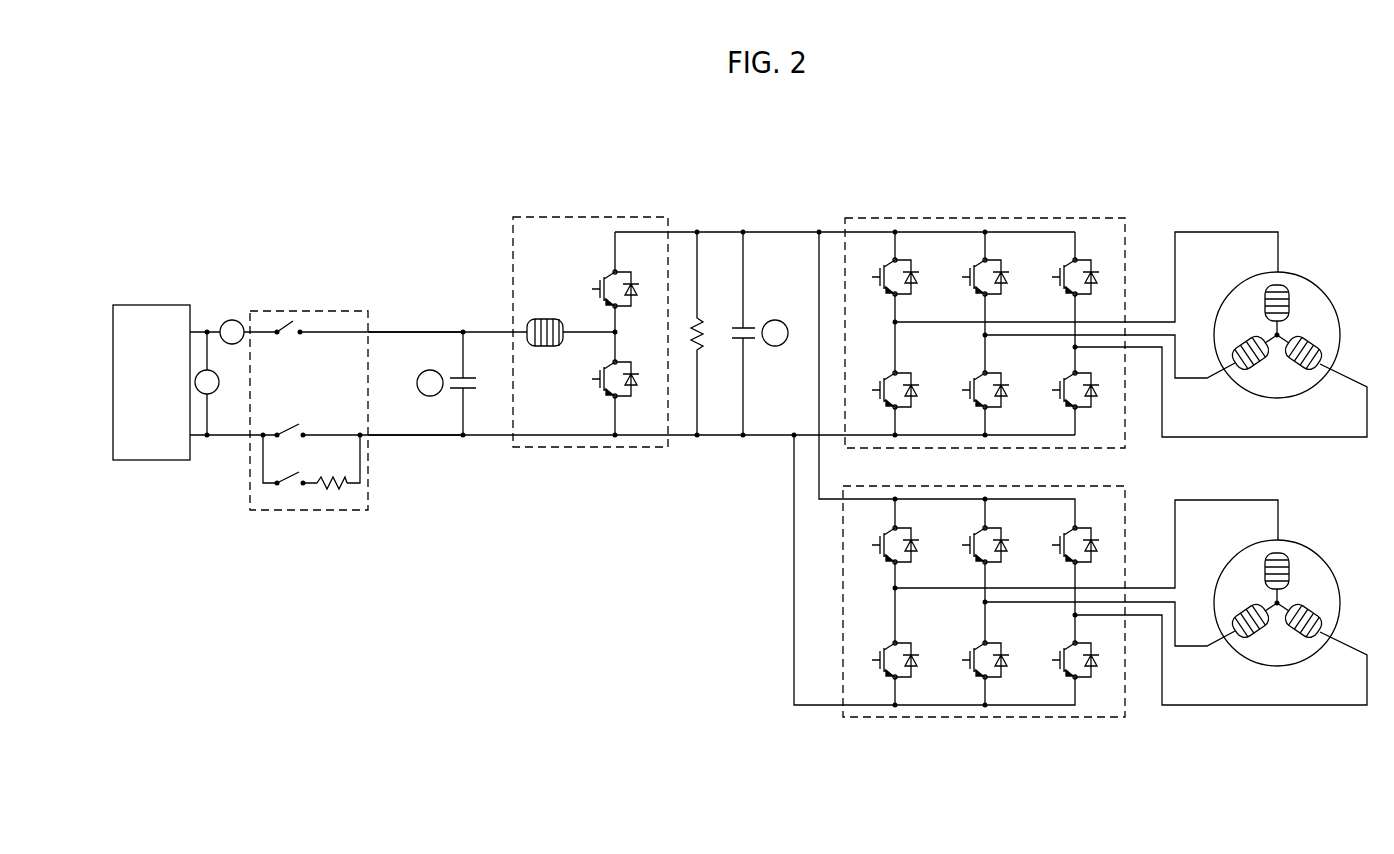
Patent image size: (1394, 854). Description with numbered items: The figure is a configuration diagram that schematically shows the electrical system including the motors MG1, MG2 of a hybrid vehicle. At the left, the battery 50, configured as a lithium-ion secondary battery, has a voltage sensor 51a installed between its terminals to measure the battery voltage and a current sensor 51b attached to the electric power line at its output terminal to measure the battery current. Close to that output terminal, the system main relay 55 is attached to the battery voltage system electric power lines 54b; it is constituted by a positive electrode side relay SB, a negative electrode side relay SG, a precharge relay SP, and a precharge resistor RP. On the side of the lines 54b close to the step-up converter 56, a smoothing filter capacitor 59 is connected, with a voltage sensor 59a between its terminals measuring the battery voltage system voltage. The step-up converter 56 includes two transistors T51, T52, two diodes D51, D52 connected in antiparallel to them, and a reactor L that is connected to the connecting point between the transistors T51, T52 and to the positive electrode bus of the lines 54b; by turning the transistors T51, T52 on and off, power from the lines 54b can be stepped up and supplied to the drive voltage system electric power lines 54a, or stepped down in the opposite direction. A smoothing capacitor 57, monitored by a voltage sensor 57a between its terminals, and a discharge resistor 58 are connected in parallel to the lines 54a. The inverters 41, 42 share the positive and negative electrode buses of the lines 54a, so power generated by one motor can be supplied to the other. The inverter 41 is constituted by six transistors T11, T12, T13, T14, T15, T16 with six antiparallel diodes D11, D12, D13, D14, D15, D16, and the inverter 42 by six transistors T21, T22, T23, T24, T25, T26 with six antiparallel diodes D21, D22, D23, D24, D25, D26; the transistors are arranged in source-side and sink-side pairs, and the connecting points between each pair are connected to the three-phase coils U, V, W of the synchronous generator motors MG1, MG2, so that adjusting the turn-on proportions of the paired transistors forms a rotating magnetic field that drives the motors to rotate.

The battery 50 is at (150, 305).
The voltage sensor 51a is at (215, 391).
The current sensor 51b is at (227, 320).
The system main relay 55 is at (309, 407).
The positive electrode side relay SB is at (292, 322).
The negative electrode side relay SG is at (299, 424).
The precharge relay SP is at (297, 477).
The precharge resistor RP is at (337, 492).
The battery voltage system electric power lines 54b is at (403, 434).
The filter capacitor 59 is at (459, 372).
The voltage sensor 59a is at (430, 370).
The step-up converter 56 is at (565, 358).
The reactor L is at (543, 320).
The transistor T51 is at (597, 283).
The transistor T52 is at (597, 373).
The diode D51 is at (637, 300).
The diode D52 is at (637, 390).
The smoothing capacitor 57 is at (735, 322).
The voltage sensor 57a is at (775, 320).
The discharge resistor 58 is at (700, 345).
The drive voltage system electric power lines 54a is at (807, 233).
The inverter 41 is at (985, 349).
The inverter 42 is at (984, 586).
The transistor T11 is at (875, 270).
The transistor T12 is at (965, 270).
The transistor T13 is at (1055, 270).
The transistor T14 is at (875, 383).
The transistor T15 is at (965, 383).
The transistor T16 is at (1055, 383).
The diode D11 is at (915, 287).
The diode D12 is at (1005, 287).
The diode D13 is at (1095, 287).
The diode D14 is at (915, 400).
The diode D15 is at (1005, 400).
The diode D16 is at (1095, 400).
The transistor T21 is at (875, 538).
The transistor T22 is at (965, 538).
The transistor T23 is at (1055, 538).
The transistor T24 is at (875, 653).
The transistor T25 is at (965, 653).
The transistor T26 is at (1055, 653).
The diode D21 is at (915, 555).
The diode D22 is at (1005, 555).
The diode D23 is at (1095, 555).
The diode D24 is at (915, 670).
The diode D25 is at (1005, 670).
The diode D26 is at (1095, 670).
The motor MG1 is at (1307, 273).
The motor MG2 is at (1307, 541).
The U-phase coil U is at (1273, 426).
The V-phase coil V is at (1239, 483).
The W-phase coil W is at (1316, 483).